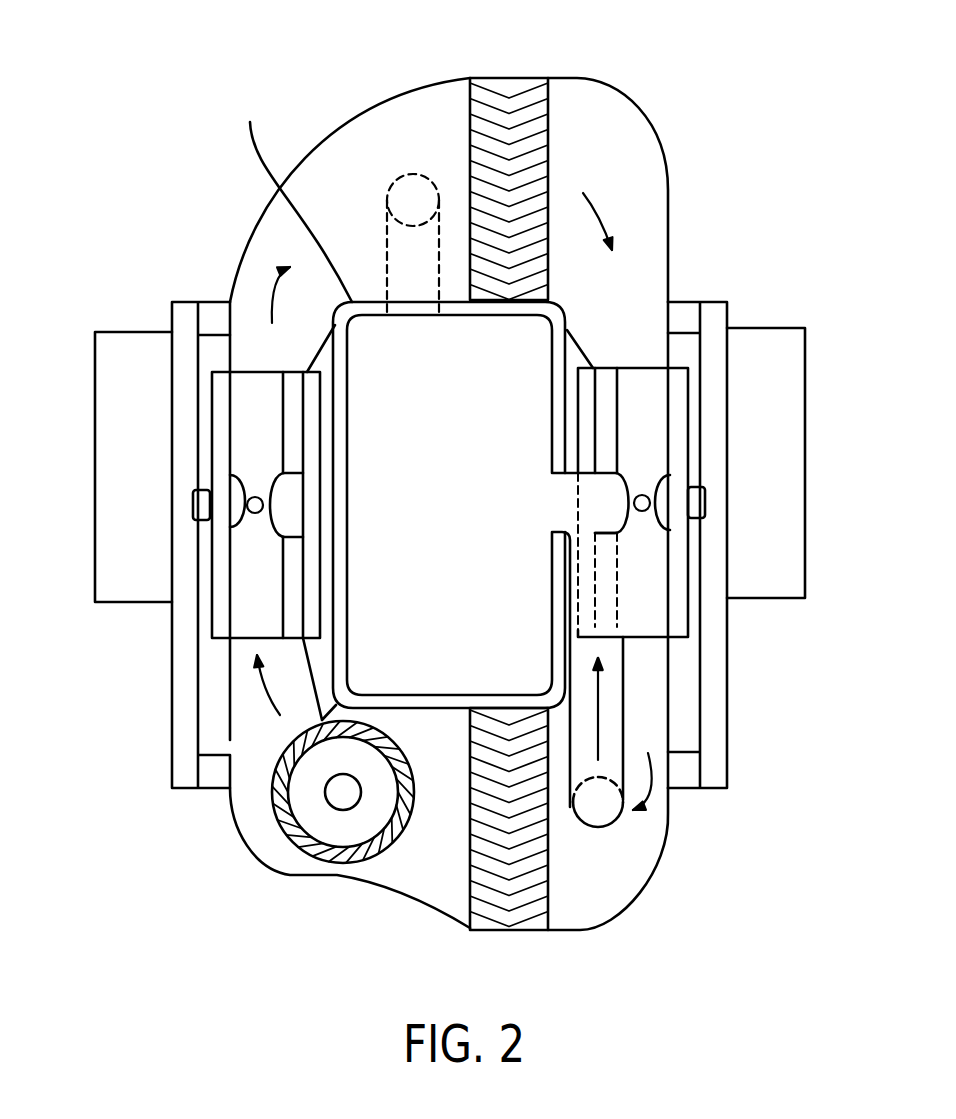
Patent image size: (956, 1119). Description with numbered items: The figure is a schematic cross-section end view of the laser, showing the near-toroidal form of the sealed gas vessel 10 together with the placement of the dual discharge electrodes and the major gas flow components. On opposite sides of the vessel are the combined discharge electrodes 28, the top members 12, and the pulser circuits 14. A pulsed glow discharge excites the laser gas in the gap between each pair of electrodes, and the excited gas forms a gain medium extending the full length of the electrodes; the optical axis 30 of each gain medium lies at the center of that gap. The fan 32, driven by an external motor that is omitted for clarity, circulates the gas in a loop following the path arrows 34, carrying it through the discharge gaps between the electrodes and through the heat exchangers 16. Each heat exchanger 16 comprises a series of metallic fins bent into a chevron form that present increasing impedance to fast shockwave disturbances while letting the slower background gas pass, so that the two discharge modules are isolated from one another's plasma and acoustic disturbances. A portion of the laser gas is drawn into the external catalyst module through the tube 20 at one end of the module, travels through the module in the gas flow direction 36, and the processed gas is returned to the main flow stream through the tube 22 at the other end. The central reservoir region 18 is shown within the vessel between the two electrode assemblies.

The sealed gas vessel 10 is at (322, 137).
The top members 12 is at (713, 298).
The pulser circuits 14 is at (763, 327).
The heat exchangers 16 is at (508, 78).
The reservoir 18 is at (465, 492).
The tube 20 is at (645, 887).
The tube 22 is at (398, 170).
The combined discharge electrodes 28 is at (275, 473).
The optical axis 30 is at (253, 522).
The fan 32 is at (280, 837).
The path arrows 34 is at (267, 295).
The gas flow direction 36 is at (603, 715).